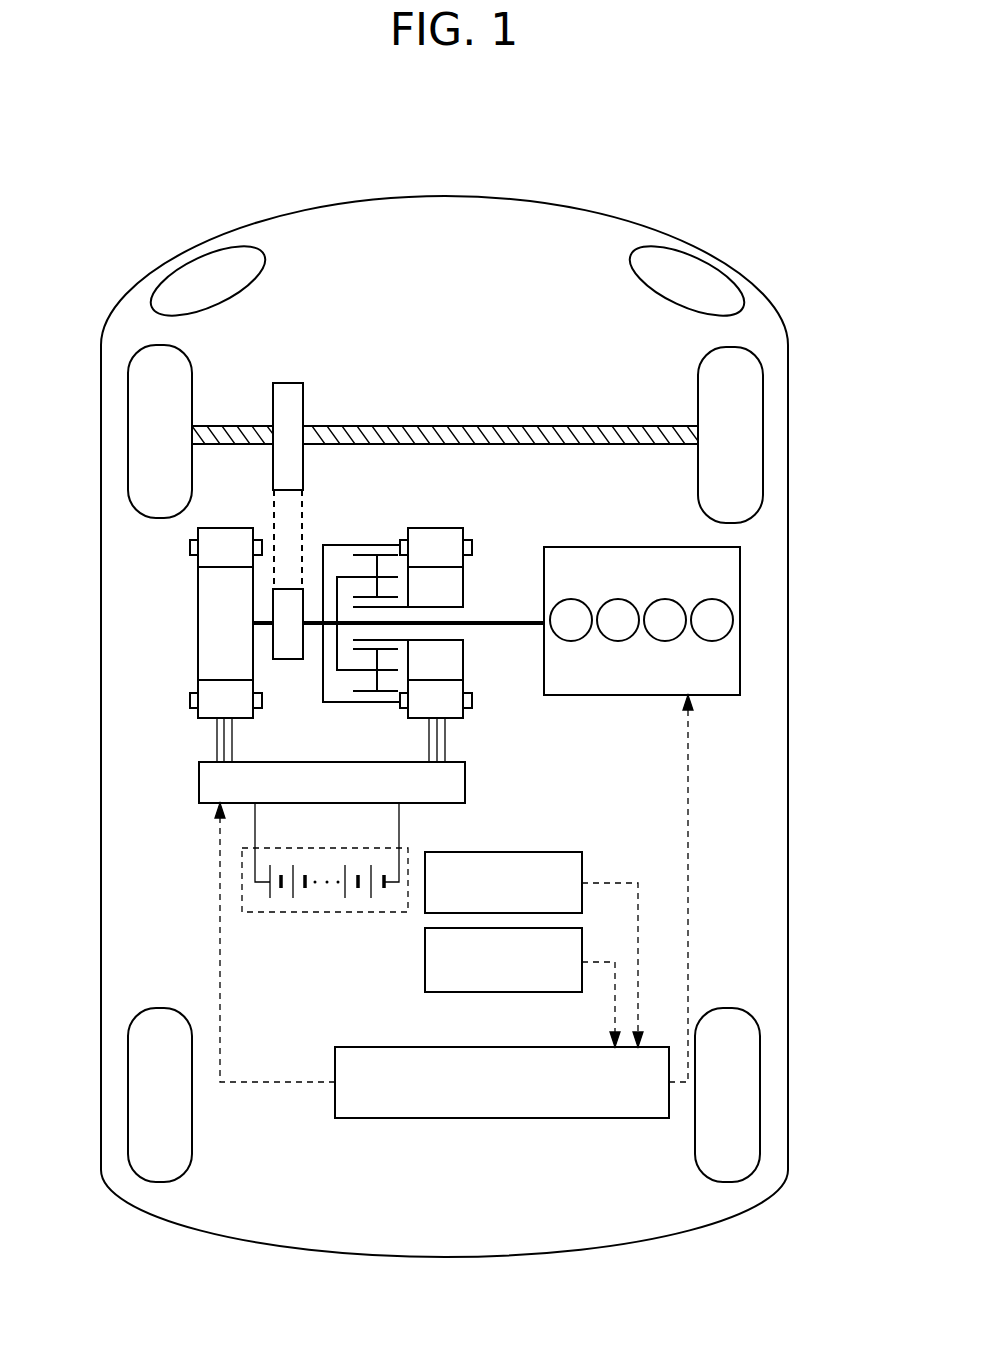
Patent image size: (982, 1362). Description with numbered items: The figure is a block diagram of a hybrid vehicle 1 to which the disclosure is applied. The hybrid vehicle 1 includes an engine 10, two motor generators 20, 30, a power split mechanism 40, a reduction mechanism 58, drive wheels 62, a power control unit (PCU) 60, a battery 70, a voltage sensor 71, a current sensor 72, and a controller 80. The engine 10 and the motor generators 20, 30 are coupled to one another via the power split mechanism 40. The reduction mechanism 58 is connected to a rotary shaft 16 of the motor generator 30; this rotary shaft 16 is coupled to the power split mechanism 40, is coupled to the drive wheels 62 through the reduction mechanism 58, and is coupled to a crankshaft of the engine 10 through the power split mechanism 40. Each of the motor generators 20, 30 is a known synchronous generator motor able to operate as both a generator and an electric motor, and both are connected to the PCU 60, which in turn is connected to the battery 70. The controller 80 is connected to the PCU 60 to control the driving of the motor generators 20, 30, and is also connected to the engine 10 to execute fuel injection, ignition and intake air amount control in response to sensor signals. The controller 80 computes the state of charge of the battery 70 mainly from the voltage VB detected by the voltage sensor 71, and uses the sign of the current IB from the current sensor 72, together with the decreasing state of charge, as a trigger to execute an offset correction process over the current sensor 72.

The hybrid vehicle 1 is at (446, 167).
The engine 10 is at (598, 547).
The rotary shaft 16 is at (314, 630).
The motor generator 20 is at (435, 527).
The motor generator 30 is at (229, 527).
The power split mechanism 40 is at (357, 544).
The reduction mechanism 58 is at (295, 383).
The power control unit (PCU) 60 is at (199, 781).
The drive wheels 62 is at (708, 352).
The battery 70 is at (325, 913).
The voltage sensor 71 is at (505, 851).
The current sensor 72 is at (505, 992).
The controller 80 is at (597, 1118).